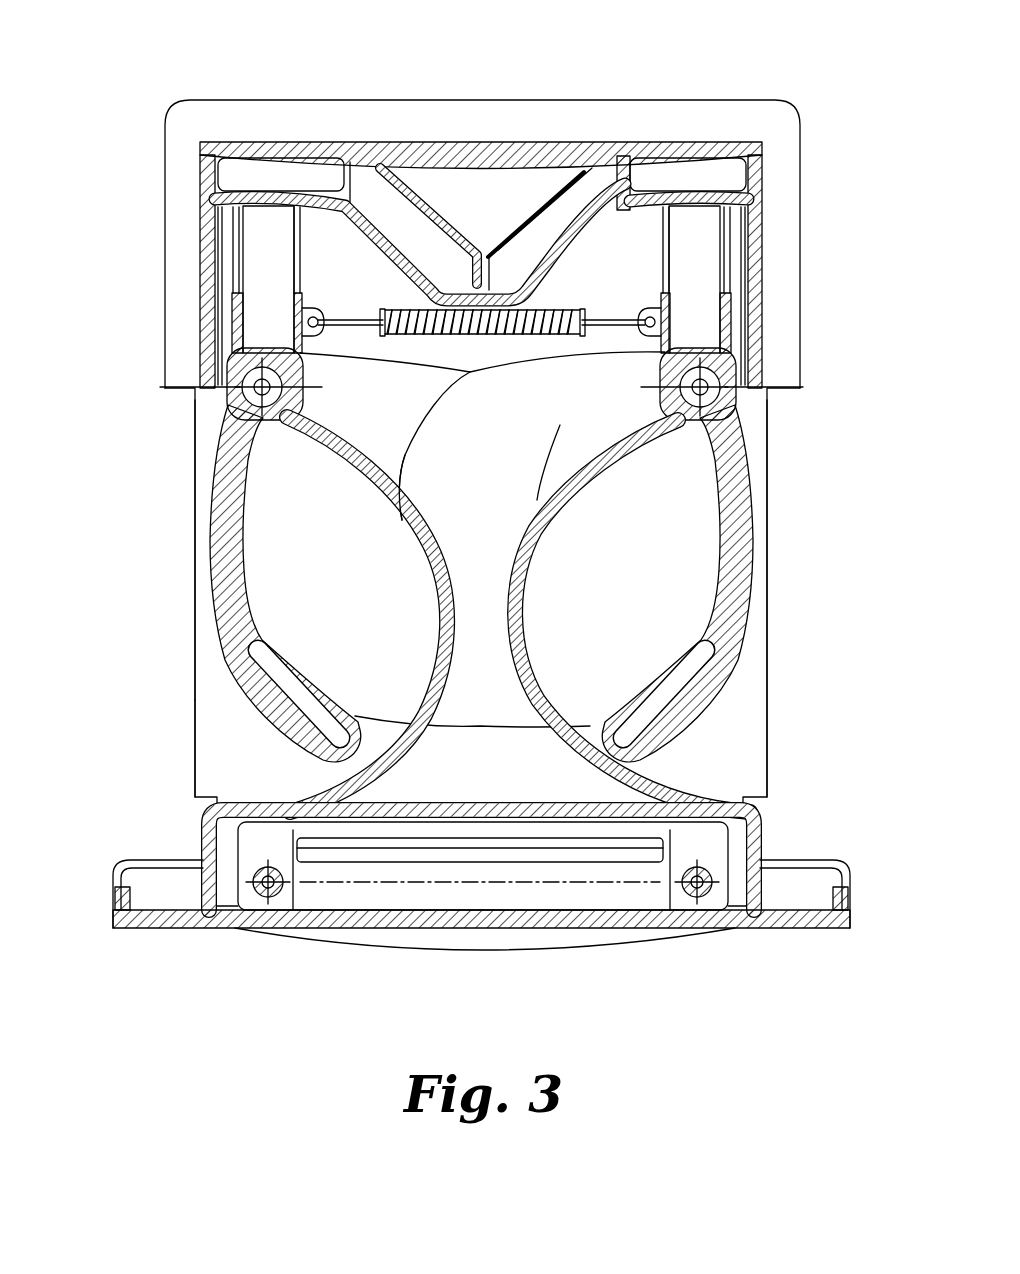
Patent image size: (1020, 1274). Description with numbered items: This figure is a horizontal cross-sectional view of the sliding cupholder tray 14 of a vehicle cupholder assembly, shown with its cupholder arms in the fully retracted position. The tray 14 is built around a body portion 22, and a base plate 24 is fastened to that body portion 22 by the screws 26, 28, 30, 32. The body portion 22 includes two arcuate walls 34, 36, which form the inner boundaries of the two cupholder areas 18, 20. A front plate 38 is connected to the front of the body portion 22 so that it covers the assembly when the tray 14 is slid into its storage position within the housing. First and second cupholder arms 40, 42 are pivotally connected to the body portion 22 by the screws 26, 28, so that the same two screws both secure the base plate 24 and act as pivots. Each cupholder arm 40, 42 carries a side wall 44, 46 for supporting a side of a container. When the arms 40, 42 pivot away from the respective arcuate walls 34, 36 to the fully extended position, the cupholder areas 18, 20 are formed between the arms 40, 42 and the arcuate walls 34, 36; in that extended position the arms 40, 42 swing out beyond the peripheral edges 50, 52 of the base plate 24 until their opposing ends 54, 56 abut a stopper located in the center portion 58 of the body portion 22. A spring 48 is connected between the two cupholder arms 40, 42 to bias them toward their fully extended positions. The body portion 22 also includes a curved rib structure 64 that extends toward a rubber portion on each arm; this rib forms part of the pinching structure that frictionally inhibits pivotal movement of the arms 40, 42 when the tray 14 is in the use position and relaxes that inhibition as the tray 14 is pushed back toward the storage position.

The tray 14 is at (141, 948).
The cupholder area 18 is at (324, 566).
The cupholder area 20 is at (630, 569).
The body portion 22 is at (197, 847).
The base plate 24 is at (213, 672).
The screw 26 is at (232, 398).
The screw 28 is at (747, 390).
The screw 30 is at (248, 903).
The screw 32 is at (700, 900).
The arcuate wall 34 is at (430, 592).
The arcuate wall 36 is at (527, 613).
The front plate 38 is at (340, 930).
The first cupholder arm 40 is at (213, 478).
The second cupholder arm 42 is at (742, 470).
The side wall 44 is at (257, 582).
The side wall 46 is at (703, 565).
The spring 48 is at (408, 308).
The peripheral edge 50 is at (195, 713).
The peripheral edge 52 is at (770, 720).
The opposing end 54 is at (240, 250).
The opposing end 56 is at (730, 267).
The center portion 58 is at (487, 235).
The curved rib structure 64 is at (543, 193).